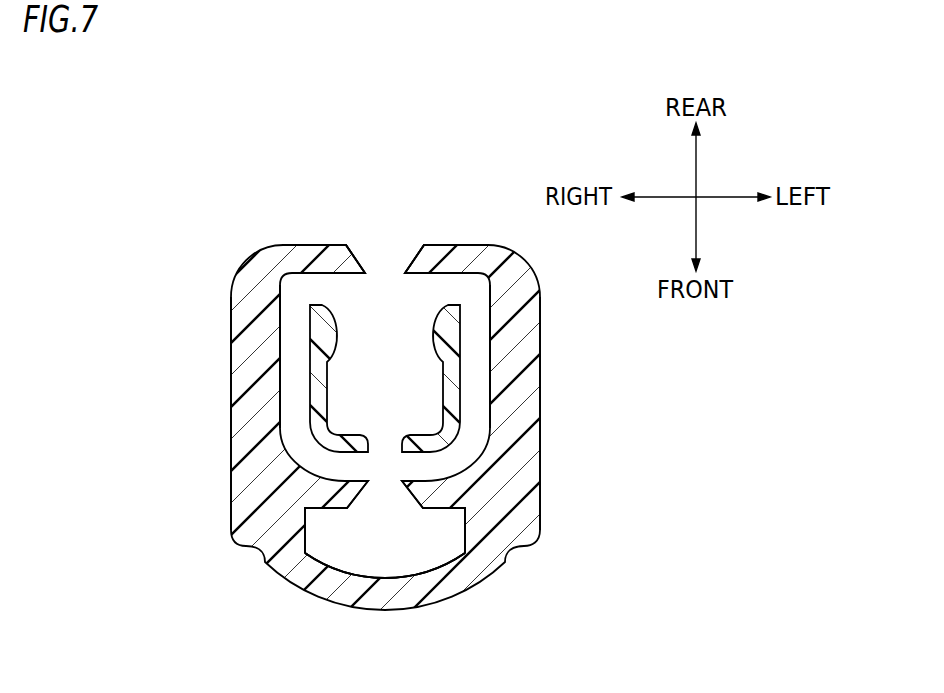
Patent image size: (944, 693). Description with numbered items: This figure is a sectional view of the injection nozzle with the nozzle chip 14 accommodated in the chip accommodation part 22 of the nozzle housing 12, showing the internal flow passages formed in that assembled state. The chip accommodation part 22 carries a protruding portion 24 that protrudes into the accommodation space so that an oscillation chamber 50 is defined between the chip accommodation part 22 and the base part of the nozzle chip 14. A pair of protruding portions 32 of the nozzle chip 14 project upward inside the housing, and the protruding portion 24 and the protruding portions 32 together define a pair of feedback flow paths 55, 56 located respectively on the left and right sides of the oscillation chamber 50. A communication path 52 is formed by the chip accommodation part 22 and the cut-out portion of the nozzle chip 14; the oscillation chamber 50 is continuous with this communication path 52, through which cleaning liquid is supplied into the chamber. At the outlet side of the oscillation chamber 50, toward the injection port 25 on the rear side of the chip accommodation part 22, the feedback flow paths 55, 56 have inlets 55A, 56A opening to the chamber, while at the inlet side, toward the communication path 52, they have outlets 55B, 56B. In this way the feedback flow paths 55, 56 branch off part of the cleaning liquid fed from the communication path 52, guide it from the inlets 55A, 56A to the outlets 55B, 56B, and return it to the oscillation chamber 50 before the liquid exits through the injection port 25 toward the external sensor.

The nozzle housing 12 is at (472, 421).
The chip accommodation part 22 is at (230, 242).
The nozzle chip 14 is at (397, 380).
The protruding portions 32 is at (327, 378).
The protruding portion 24 is at (255, 402).
The injection port 25 is at (385, 268).
The oscillation chamber 50 is at (392, 352).
The communication path 52 is at (380, 548).
The feedback flow path 55 is at (297, 351).
The inlet 55A is at (320, 298).
The outlet 55B is at (347, 476).
The feedback flow path 56 is at (473, 345).
The inlet 56A is at (455, 298).
The outlet 56B is at (413, 468).